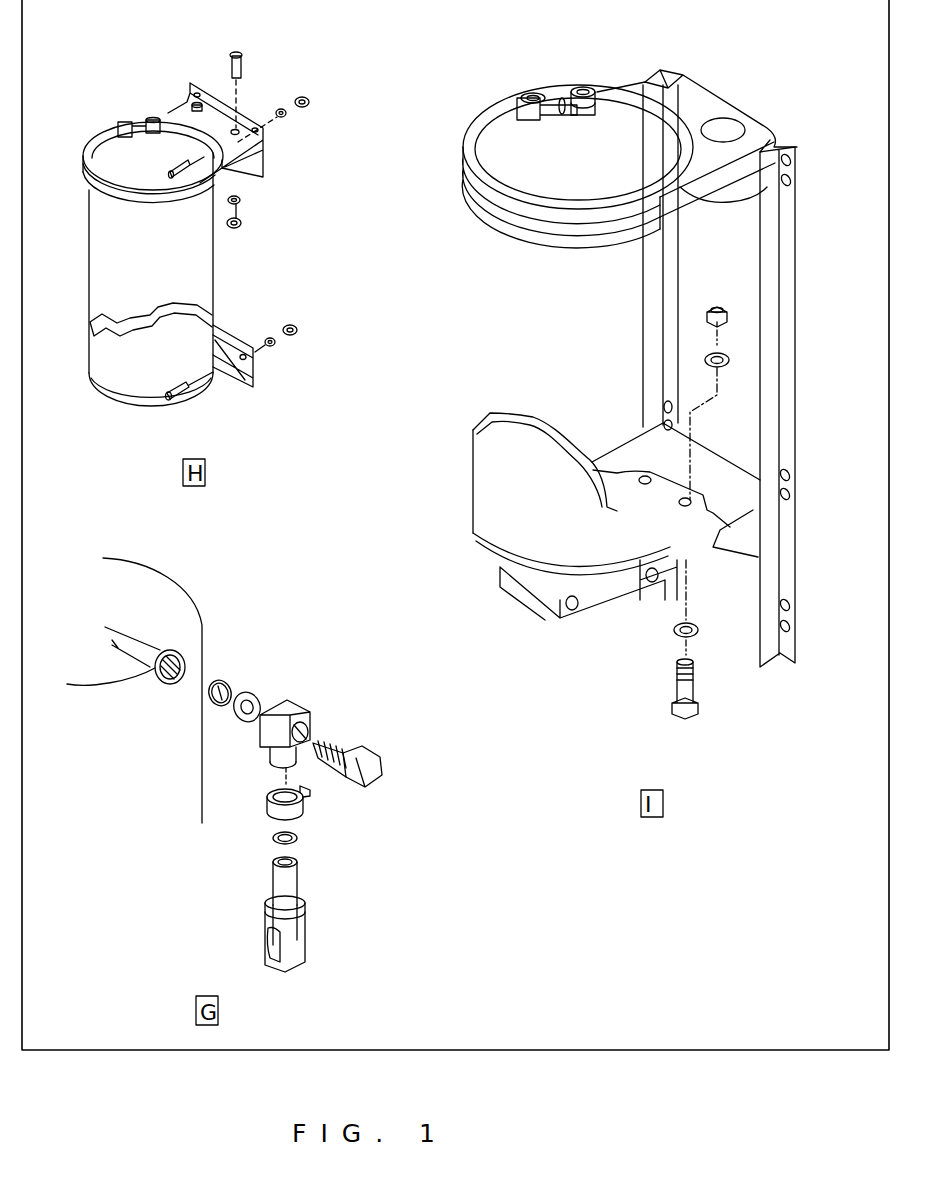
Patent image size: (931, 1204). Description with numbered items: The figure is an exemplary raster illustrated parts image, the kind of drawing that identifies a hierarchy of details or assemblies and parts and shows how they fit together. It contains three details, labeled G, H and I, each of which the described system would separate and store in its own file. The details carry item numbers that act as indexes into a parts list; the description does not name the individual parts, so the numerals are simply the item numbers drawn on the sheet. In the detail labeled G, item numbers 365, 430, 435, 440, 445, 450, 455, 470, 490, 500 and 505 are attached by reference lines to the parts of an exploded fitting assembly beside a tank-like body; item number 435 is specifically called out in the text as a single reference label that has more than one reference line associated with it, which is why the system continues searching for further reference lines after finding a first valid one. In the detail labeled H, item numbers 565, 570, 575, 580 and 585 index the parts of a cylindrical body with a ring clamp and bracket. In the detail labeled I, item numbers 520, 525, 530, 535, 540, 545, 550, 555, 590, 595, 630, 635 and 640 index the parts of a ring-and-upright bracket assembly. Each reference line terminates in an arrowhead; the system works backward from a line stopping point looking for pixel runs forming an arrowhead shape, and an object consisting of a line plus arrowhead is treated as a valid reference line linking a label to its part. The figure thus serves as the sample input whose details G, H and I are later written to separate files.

The tank 365 is at (207, 595).
The bolt 430 is at (380, 751).
The item number 435 is at (352, 742).
The elbow fitting 440 is at (301, 710).
The washer 445 is at (260, 694).
The gasket 450 is at (228, 678).
The hose clamp 455 is at (309, 813).
The sleeve 470 is at (262, 930).
The sleeve 490 is at (308, 930).
The tube 500 is at (300, 872).
The tube bore 505 is at (367, 899).
The upright bar 520 is at (800, 224).
The holes 525 is at (794, 481).
The bolt 530 is at (676, 694).
The washer 535 is at (674, 636).
The washer 540 is at (732, 365).
The nut 545 is at (732, 312).
The ring clamp 550 is at (461, 158).
The top plate 555 is at (730, 97).
The washer 565 is at (285, 121).
The nut 570 is at (311, 108).
The tank with ring clamp 575 is at (162, 172).
The bolt 580 is at (247, 57).
The bolt 585 is at (178, 406).
The strap 590 is at (752, 158).
The ring band 595 is at (522, 222).
The washer 630 is at (559, 88).
The clamp nut 635 is at (530, 98).
The clamp block 640 is at (586, 84).